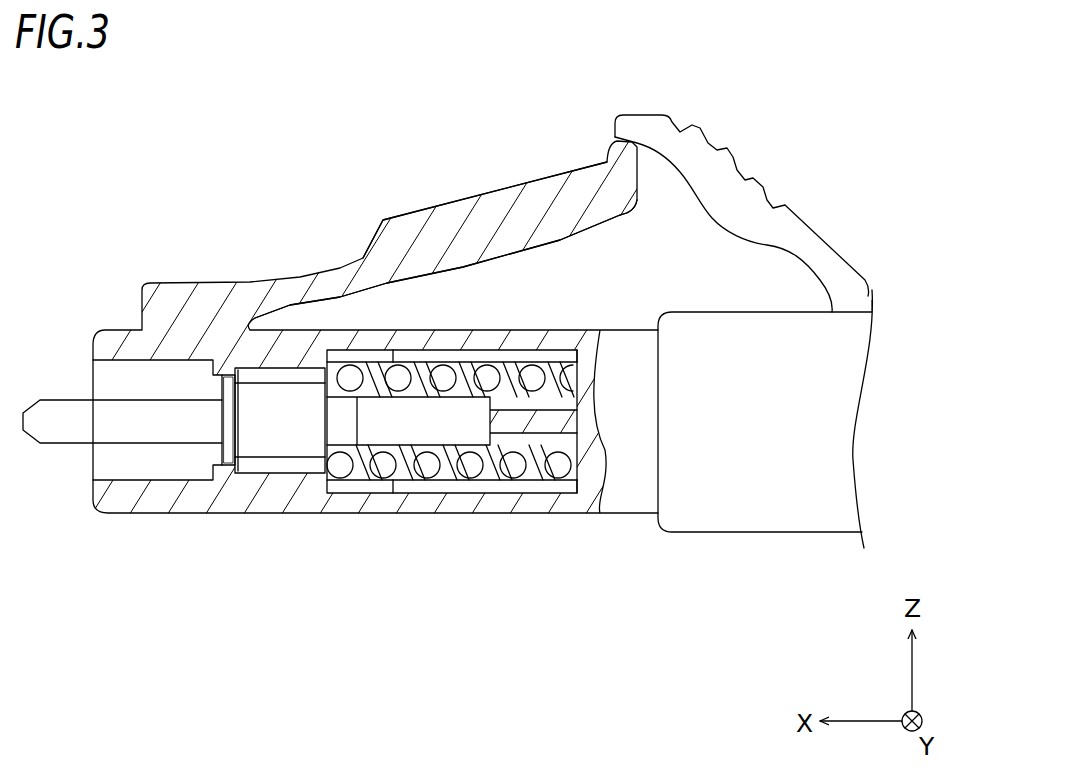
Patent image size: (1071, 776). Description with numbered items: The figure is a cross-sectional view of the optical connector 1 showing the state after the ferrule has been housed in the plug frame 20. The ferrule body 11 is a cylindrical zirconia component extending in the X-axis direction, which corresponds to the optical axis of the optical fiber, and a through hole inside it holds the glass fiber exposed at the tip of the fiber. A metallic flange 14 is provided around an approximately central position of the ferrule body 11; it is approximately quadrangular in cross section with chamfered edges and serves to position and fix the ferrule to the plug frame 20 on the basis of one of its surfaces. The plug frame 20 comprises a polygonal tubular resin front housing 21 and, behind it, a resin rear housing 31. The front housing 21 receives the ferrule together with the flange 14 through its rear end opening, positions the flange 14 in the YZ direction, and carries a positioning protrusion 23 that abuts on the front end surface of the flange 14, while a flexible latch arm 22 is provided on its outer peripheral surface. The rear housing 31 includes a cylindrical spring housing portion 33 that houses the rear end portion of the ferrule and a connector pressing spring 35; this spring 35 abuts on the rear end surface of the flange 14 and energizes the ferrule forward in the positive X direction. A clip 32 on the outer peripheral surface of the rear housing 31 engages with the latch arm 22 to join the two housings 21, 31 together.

The optical connector 1 is at (238, 163).
The ferrule body 11 is at (80, 432).
The flange 14 is at (280, 475).
The plug frame 20 is at (423, 547).
The front housing 21 is at (130, 514).
The latch arm 22 is at (548, 193).
The positioning protrusion 23 is at (222, 480).
The rear housing 31 is at (758, 520).
The clip 32 is at (734, 150).
The spring housing portion 33 is at (455, 497).
The connector pressing spring 35 is at (510, 477).